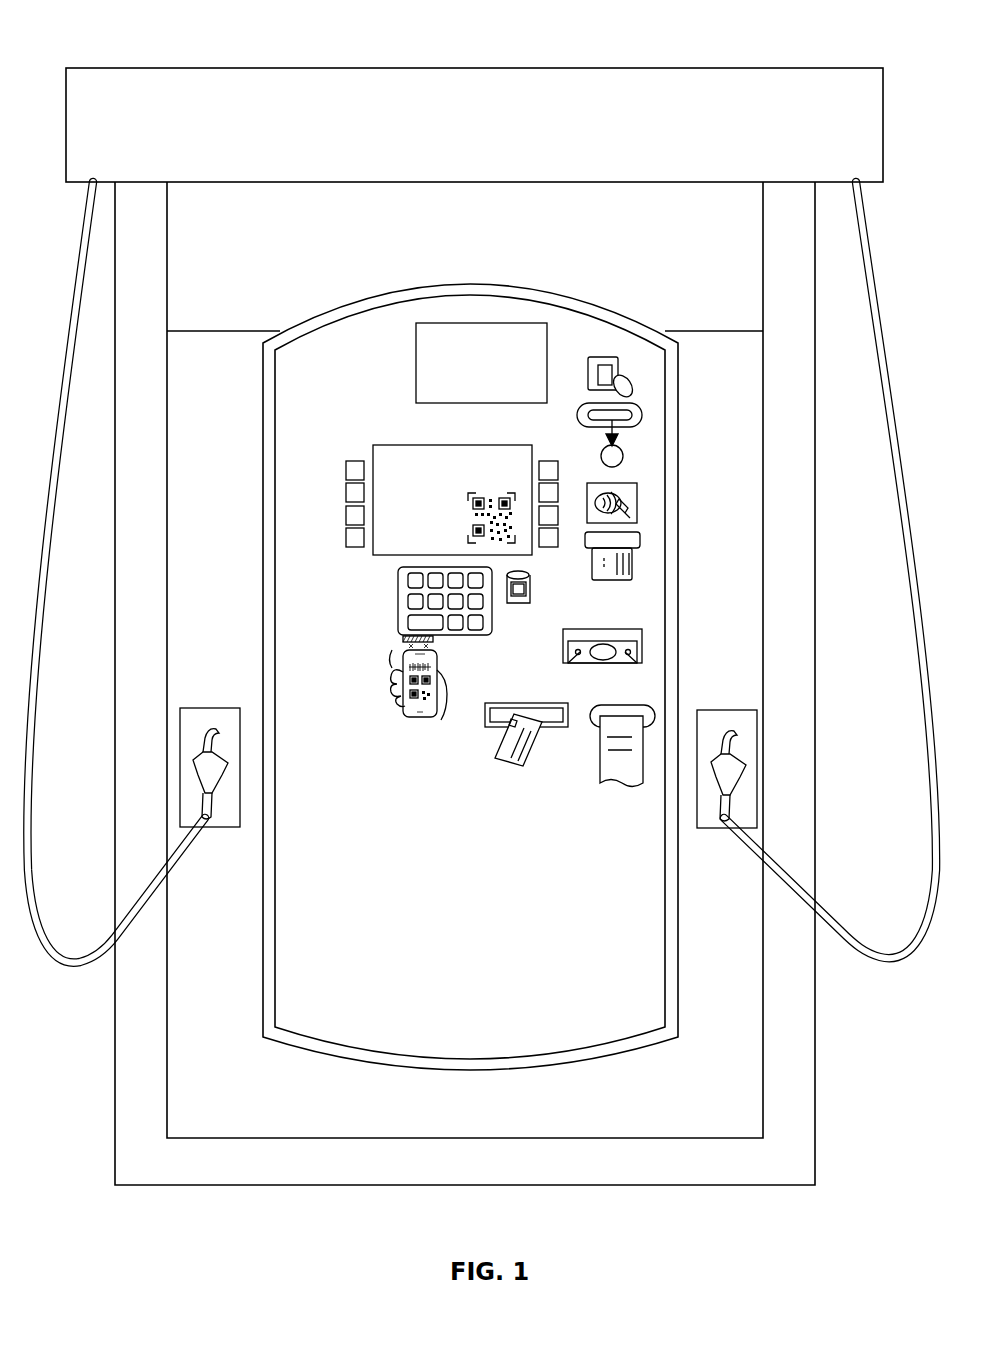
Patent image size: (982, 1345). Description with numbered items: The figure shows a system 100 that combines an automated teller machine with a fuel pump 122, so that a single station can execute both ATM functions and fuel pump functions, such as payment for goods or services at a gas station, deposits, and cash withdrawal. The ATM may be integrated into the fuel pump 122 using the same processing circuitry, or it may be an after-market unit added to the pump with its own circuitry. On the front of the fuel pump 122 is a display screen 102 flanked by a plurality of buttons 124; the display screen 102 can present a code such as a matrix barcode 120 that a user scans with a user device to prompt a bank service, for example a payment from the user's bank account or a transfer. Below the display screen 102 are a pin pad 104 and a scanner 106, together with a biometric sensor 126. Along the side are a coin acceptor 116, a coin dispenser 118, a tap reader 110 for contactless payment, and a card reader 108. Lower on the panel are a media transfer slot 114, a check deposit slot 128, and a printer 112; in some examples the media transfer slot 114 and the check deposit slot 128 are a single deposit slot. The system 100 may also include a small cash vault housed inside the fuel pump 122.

The system 100 is at (834, 52).
The display screen 102 is at (408, 443).
The pin pad 104 is at (398, 590).
The scanner 106 is at (392, 686).
The card reader 108 is at (640, 557).
The tap reader 110 is at (637, 513).
The printer 112 is at (597, 730).
The media transfer slot 114 is at (563, 635).
The coin acceptor 116 is at (606, 357).
The coin dispenser 118 is at (642, 422).
The matrix barcode 120 is at (470, 502).
The fuel pump 122 is at (183, 73).
The buttons 124 is at (332, 498).
The biometric sensor 126 is at (522, 602).
The check deposit slot 128 is at (486, 713).